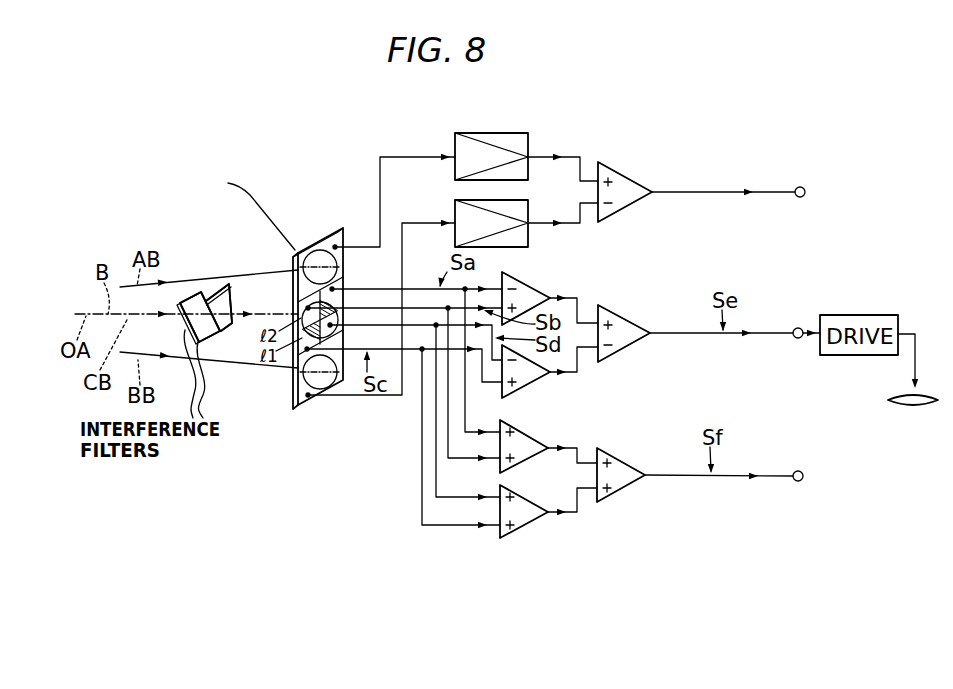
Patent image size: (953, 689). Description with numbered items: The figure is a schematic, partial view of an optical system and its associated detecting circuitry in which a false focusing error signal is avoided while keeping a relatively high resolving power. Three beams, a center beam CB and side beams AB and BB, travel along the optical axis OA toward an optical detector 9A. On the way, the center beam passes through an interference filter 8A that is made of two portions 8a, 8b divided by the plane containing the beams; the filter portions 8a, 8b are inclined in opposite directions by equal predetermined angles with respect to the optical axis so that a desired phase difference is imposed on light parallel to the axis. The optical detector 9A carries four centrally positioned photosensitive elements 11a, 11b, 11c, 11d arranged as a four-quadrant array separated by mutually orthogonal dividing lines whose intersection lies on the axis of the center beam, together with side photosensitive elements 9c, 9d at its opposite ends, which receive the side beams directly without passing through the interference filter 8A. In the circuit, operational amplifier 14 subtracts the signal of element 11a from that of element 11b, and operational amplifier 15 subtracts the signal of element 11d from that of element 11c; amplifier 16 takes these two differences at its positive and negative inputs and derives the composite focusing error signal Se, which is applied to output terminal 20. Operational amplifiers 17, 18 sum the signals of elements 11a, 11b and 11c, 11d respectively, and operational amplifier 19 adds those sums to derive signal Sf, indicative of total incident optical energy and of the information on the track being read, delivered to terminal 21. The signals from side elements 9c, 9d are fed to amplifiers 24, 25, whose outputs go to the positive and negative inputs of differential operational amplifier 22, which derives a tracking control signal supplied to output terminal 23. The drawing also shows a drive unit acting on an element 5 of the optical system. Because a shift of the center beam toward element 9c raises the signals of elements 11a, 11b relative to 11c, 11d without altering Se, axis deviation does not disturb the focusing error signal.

The optical detector 9A is at (294, 238).
The side photosensitive element 9c is at (339, 228).
The side photosensitive element 9d is at (306, 408).
The photosensitive element 11a is at (345, 287).
The photosensitive element 11b is at (300, 305).
The photosensitive element 11c is at (298, 353).
The photosensitive element 11d is at (343, 333).
The interference filter 8A is at (203, 280).
The filter portion 8a is at (205, 333).
The filter portion 8b is at (226, 297).
The operational amplifier 14 is at (536, 290).
The operational amplifier 15 is at (522, 387).
The amplifier 16 is at (637, 326).
The operational amplifier 17 is at (533, 439).
The operational amplifier 18 is at (533, 502).
The operational amplifier 19 is at (617, 459).
The output terminal 20 is at (798, 328).
The terminal 21 is at (799, 471).
The differential operational amplifier 22 is at (628, 179).
The output terminal 23 is at (800, 187).
The amplifier 24 is at (503, 133).
The amplifier 25 is at (526, 200).
The lens 5 is at (902, 396).